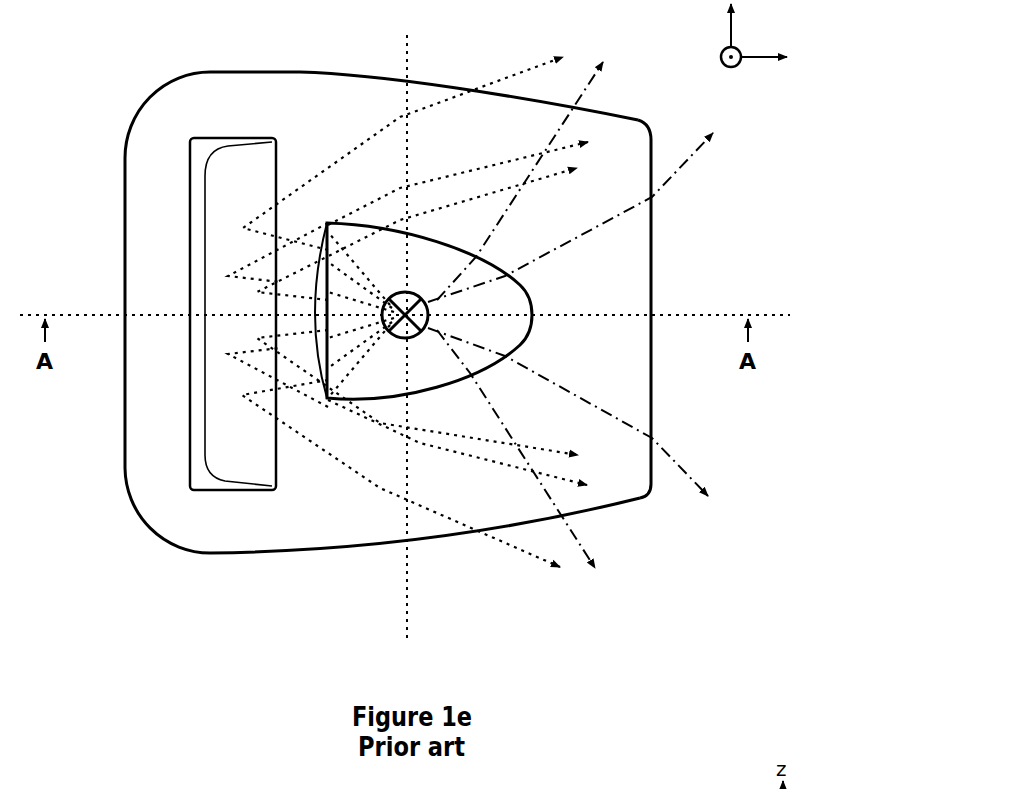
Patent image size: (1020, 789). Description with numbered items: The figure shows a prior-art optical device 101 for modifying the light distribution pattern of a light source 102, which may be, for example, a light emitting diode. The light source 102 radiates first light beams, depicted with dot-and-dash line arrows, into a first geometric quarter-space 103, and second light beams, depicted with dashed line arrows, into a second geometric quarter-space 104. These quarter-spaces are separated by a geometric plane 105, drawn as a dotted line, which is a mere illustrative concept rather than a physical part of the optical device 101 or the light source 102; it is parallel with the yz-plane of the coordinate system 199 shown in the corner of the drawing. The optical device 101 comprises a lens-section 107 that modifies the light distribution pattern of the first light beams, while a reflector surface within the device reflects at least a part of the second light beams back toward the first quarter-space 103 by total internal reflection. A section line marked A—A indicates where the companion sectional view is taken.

The optical device 101 is at (179, 66).
The light source 102 is at (410, 338).
The first geometric quarter-space 103 is at (675, 309).
The second geometric quarter-space 104 is at (172, 314).
The geometric plane 105 is at (408, 603).
The lens-section 107 is at (514, 315).
The coordinate system 199 is at (756, 45).